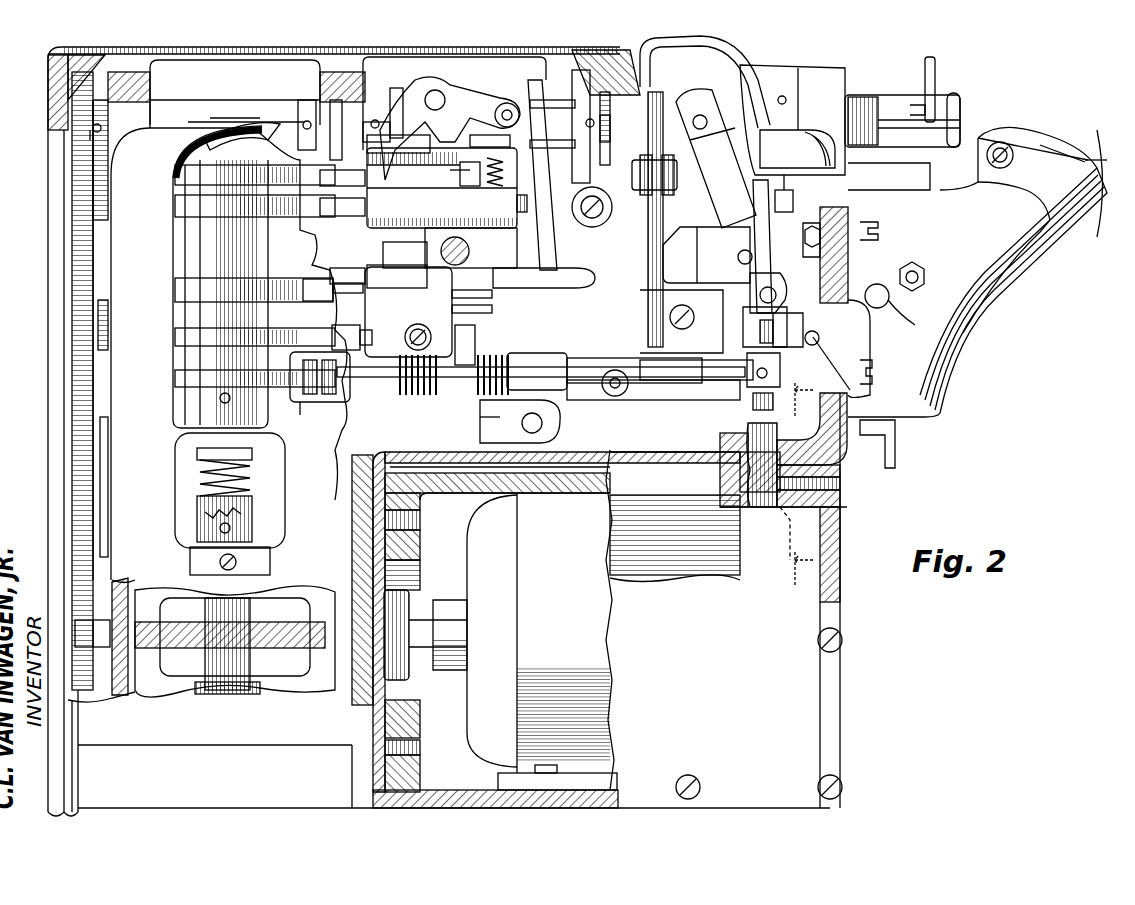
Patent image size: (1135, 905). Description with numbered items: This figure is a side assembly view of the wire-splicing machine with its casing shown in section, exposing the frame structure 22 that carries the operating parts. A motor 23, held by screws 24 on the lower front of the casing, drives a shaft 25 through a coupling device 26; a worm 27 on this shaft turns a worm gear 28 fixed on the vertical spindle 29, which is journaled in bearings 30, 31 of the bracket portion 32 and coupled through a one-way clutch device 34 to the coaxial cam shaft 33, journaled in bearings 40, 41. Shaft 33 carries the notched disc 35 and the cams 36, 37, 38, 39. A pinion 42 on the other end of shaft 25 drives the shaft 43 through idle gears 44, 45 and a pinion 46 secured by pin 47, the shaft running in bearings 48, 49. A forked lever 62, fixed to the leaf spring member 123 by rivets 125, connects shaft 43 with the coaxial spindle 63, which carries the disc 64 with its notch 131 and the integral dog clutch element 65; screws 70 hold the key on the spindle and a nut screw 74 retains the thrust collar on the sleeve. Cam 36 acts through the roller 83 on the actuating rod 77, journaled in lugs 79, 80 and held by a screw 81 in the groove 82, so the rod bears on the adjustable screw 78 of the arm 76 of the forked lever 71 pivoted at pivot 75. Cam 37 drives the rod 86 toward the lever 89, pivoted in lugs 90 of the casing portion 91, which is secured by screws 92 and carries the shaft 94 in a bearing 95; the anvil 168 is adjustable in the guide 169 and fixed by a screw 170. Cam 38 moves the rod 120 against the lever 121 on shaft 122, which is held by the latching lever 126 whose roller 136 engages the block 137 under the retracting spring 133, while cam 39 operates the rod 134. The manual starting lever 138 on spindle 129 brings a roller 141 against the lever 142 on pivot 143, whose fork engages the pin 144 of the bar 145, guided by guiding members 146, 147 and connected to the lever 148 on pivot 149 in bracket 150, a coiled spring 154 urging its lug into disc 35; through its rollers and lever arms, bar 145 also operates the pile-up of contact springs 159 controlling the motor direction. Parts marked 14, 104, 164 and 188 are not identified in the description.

The section line 14 is at (807, 484).
The frame structure 22 is at (835, 462).
The motor 23 is at (542, 620).
The screws 24 is at (372, 520).
The shaft 25 is at (368, 648).
The coupling device 26 is at (408, 612).
The worm 27 is at (262, 615).
The worm gear 28 is at (134, 636).
The spindle 29 is at (206, 666).
The bearing 30 is at (232, 696).
The bearing 31 is at (268, 560).
The bracket portion 32 is at (162, 128).
The shaft 33 is at (235, 110).
The one way clutch device 34 is at (245, 517).
The notched disc 35 is at (176, 378).
The cam 36 is at (176, 337).
The cam 37 is at (176, 290).
The cam 38 is at (176, 207).
The cam 39 is at (176, 173).
The bearing 40 is at (185, 422).
The bearing 41 is at (262, 122).
The pinion 42 is at (112, 590).
The shaft 43 is at (283, 118).
The idle gear 44 is at (100, 480).
The idle gear 45 is at (75, 340).
The pinion 46 is at (78, 128).
The pin 47 is at (90, 136).
The bearing 48 is at (129, 100).
The bearing 49 is at (342, 99).
The forked lever 62 is at (494, 147).
The spindle 63 is at (916, 142).
The disc 64 is at (598, 62).
The dog clutch element 65 is at (572, 95).
The screws 70 is at (400, 55).
The forked lever 71 is at (702, 160).
The nut screw 74 is at (745, 90).
The pivot 75 is at (740, 256).
The arm 76 is at (790, 348).
The actuating rod 77 is at (478, 328).
The adjustable screw 78 is at (866, 325).
The lug 79 is at (723, 337).
The lug 80 is at (428, 308).
The screw 81 is at (432, 329).
The groove 82 is at (469, 345).
The roller 83 is at (350, 326).
The rod 86 is at (360, 278).
The lever 89 is at (806, 262).
The lugs 90 is at (808, 346).
The casing portion 91 is at (988, 292).
The screws 92 is at (872, 232).
The shaft 94 is at (888, 300).
The bearing 95 is at (917, 317).
The bracket 104 is at (896, 443).
The rod 120 is at (358, 216).
The lever 121 is at (548, 240).
The shaft 122 is at (520, 421).
The leaf spring member 123 is at (528, 262).
The rivets 125 is at (505, 175).
The latching lever 126 is at (470, 90).
The spindle 129 is at (805, 165).
The notch 131 is at (600, 130).
The retracting spring 133 is at (498, 190).
The rod 134 is at (348, 162).
The roller 136 is at (512, 110).
The block 137 is at (445, 98).
The manually operable lever member 138 is at (720, 56).
The roller 141 is at (795, 200).
The lever 142 is at (772, 225).
The pivot 143 is at (768, 293).
The pin 144 is at (761, 430).
The bar 145 is at (640, 360).
The guiding member 146 is at (718, 394).
The guiding member 147 is at (535, 355).
The lever 148 is at (345, 395).
The pivot 149 is at (305, 404).
The bracket 150 is at (280, 440).
The coiled spring 154 is at (412, 396).
The pile-up of contact springs 159 is at (690, 538).
The lever 164 is at (936, 68).
The anvil 168 is at (1058, 150).
The guide 169 is at (1062, 162).
The screw 170 is at (1010, 150).
The pin 188 is at (468, 252).